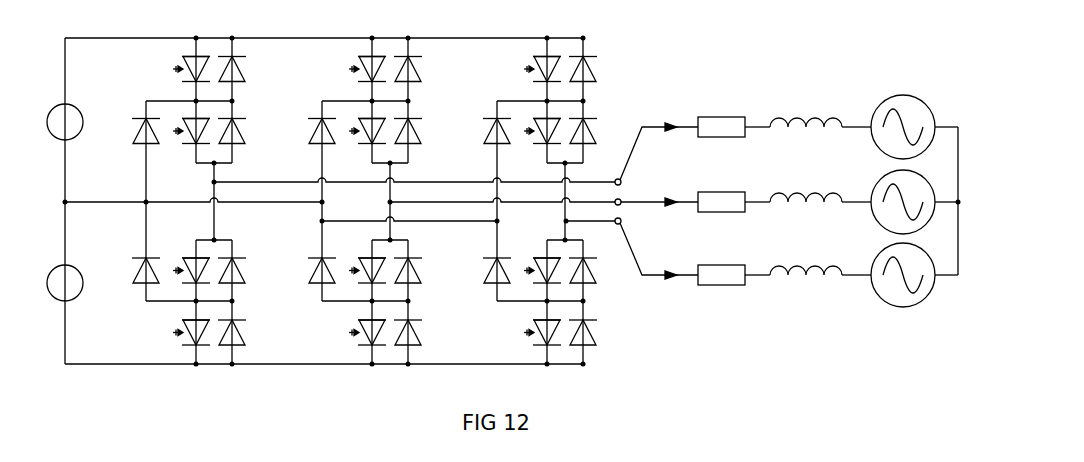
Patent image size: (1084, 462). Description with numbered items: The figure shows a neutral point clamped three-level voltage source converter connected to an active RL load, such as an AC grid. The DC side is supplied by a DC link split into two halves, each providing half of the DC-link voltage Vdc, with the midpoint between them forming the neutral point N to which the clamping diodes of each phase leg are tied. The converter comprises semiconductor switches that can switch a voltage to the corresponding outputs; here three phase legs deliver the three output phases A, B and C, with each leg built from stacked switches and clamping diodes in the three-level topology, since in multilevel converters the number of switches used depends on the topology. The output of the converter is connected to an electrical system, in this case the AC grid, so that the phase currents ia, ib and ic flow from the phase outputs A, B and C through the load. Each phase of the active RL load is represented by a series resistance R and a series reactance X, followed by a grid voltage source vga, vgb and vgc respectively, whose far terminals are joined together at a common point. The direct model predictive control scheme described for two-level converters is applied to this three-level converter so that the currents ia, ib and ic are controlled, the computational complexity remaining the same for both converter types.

The DC-link half voltage sources Vdc is at (96, 118).
The neutral point N is at (271, 213).
The phase A output A is at (403, 184).
The phase B output B is at (491, 204).
The phase C output C is at (579, 223).
The phase a current ia is at (659, 140).
The phase b current ib is at (659, 191).
The phase c current ic is at (659, 251).
The grid resistance R is at (721, 188).
The grid reactance X is at (808, 183).
The grid voltage phase a vga is at (912, 115).
The grid voltage phase b vgb is at (914, 202).
The grid voltage phase c vgc is at (912, 289).